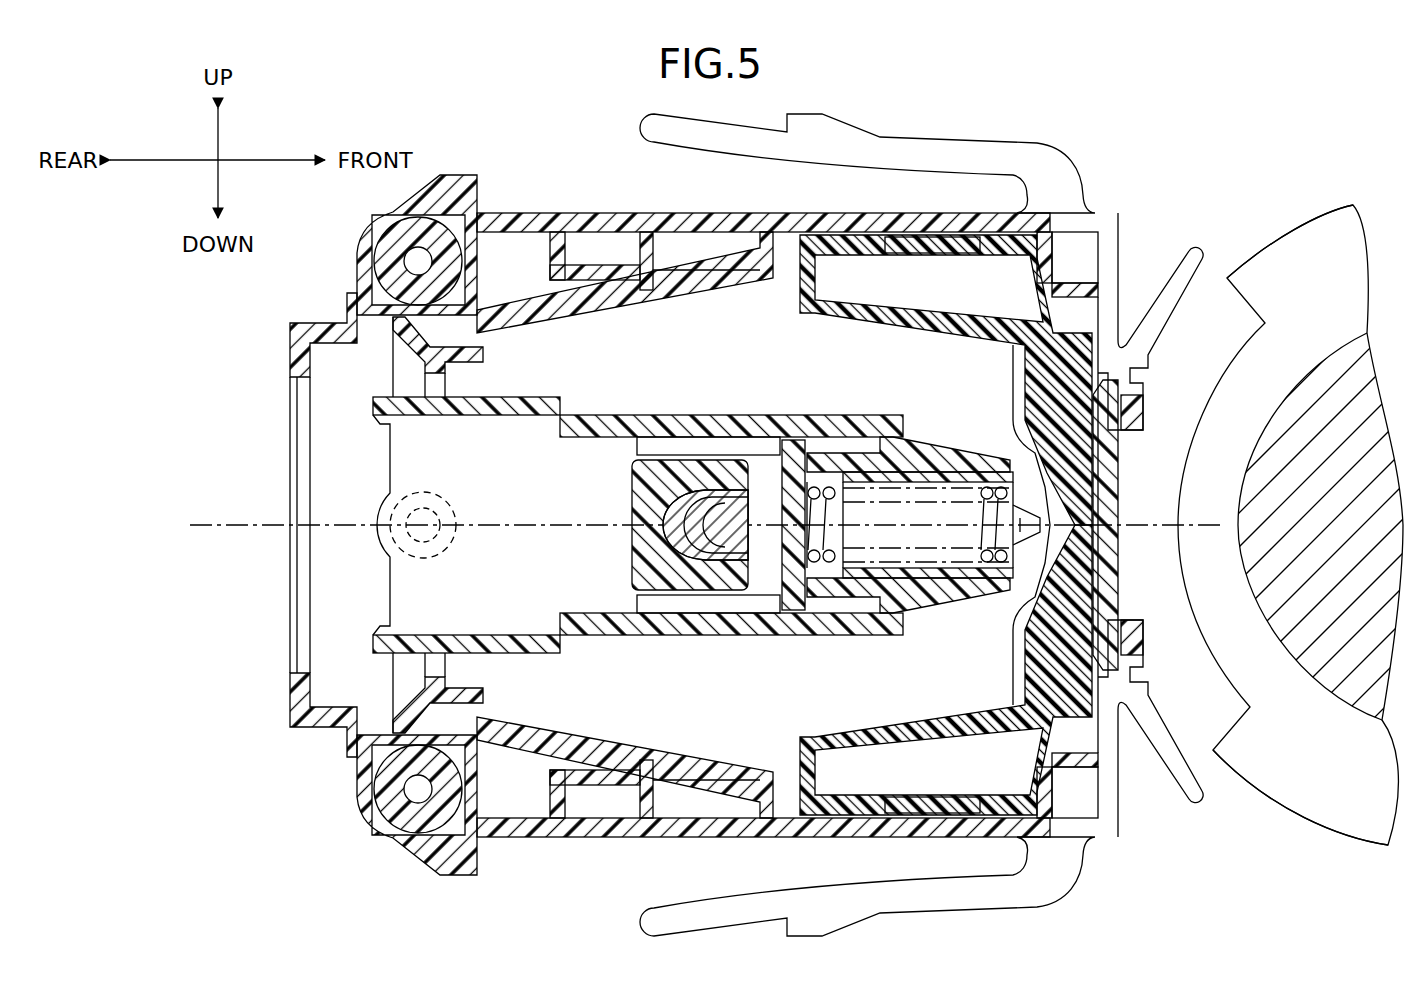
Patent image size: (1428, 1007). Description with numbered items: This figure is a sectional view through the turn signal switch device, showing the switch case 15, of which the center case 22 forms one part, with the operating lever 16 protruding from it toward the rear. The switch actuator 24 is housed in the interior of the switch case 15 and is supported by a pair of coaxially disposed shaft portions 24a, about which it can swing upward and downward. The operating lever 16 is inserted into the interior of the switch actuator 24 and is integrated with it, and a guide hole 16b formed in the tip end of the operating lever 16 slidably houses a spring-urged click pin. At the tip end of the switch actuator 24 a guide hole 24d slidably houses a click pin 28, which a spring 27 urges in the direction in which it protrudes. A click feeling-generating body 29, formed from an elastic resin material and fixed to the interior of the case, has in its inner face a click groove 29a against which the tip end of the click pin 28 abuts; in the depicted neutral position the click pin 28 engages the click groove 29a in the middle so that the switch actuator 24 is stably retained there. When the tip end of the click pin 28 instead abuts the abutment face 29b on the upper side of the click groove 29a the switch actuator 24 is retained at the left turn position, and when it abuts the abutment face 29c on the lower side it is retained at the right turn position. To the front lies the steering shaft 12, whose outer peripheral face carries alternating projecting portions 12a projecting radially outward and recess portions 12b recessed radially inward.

The steering shaft 12 is at (1338, 205).
The projecting portion 12a is at (1282, 234).
The recess portion 12b is at (1205, 375).
The switch case 15 is at (548, 183).
The operating lever 16 is at (630, 558).
The guide hole 16b is at (668, 518).
The center case 22 is at (632, 212).
The switch actuator 24 is at (600, 405).
The shaft portion 24a is at (458, 512).
The guide hole 24d is at (900, 562).
The spring 27 is at (818, 486).
The click pin 28 is at (925, 470).
The click feeling-generating body 29 is at (1090, 572).
The click groove 29a is at (1092, 492).
The abutment face 29b is at (1011, 400).
The abutment face 29c is at (1010, 635).